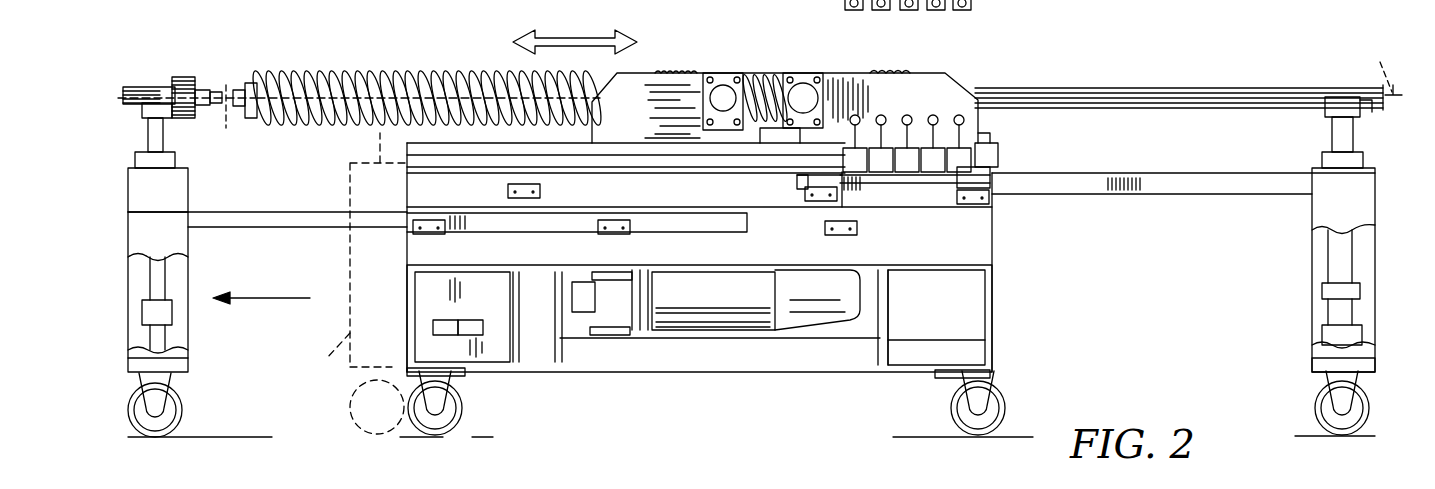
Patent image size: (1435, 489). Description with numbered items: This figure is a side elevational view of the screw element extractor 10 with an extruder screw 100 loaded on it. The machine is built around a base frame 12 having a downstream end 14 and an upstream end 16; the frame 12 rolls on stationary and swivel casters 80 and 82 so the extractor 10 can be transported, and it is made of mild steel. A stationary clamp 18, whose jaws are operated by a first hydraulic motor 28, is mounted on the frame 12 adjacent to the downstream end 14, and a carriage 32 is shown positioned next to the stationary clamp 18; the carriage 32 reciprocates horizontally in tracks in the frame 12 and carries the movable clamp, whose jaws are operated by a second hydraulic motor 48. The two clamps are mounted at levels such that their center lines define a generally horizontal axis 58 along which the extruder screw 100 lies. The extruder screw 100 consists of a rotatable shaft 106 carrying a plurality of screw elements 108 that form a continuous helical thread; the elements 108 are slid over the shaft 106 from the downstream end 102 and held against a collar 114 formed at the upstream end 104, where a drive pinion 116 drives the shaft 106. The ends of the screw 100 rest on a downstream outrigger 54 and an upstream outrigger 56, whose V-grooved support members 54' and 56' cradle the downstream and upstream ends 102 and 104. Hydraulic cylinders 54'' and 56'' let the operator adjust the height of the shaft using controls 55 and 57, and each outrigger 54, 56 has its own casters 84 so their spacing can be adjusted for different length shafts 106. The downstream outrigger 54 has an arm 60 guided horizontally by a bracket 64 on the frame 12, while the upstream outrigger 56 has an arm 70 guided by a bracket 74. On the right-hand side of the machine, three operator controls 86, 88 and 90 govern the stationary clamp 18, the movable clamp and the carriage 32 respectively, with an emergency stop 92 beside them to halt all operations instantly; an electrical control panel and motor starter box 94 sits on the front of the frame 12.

The screw element extractor 10 is at (208, 46).
The base frame 12 is at (668, 362).
The downstream end 14 is at (992, 245).
The upstream end 16 is at (407, 247).
The stationary clamp 18 is at (828, 70).
The hydraulic motor 28 is at (803, 96).
The carriage 32 is at (680, 87).
The hydraulic motor 48 is at (710, 98).
The downstream outrigger 54 is at (1316, 270).
The support member 54' is at (1310, 132).
The hydraulic cylinder 54'' is at (1305, 287).
The control 55 is at (965, 120).
The upstream outrigger 56 is at (267, 283).
The support member 56' is at (185, 152).
The hydraulic cylinder 56'' is at (203, 303).
The control 57 is at (850, 122).
The horizontal axis 58 is at (228, 125).
The arm 60 is at (1205, 192).
The bracket 64 is at (820, 205).
The arm 70 is at (292, 215).
The bracket 74 is at (428, 236).
The stationary caster 80 is at (463, 405).
The swivel caster 82 is at (1010, 405).
The caster 84 is at (184, 402).
The operator control 86 is at (935, 117).
The operator control 88 is at (884, 90).
The operator control 90 is at (917, 90).
The emergency stop 92 is at (998, 155).
The electrical control panel and motor starter box 94 is at (497, 302).
The extruder screw 100 is at (318, 142).
The downstream end 102 is at (1372, 112).
The upstream end 104 is at (138, 87).
The shaft 106 is at (1096, 96).
The screw elements 108 is at (342, 70).
The collar 114 is at (248, 86).
The drive pinion 116 is at (183, 77).